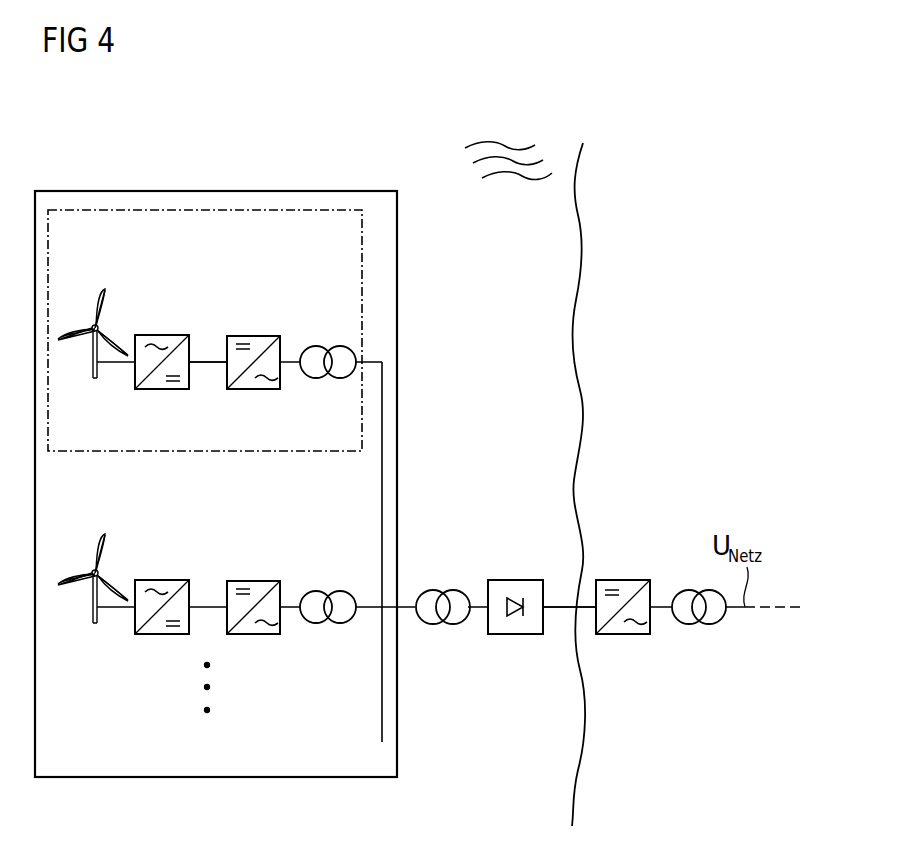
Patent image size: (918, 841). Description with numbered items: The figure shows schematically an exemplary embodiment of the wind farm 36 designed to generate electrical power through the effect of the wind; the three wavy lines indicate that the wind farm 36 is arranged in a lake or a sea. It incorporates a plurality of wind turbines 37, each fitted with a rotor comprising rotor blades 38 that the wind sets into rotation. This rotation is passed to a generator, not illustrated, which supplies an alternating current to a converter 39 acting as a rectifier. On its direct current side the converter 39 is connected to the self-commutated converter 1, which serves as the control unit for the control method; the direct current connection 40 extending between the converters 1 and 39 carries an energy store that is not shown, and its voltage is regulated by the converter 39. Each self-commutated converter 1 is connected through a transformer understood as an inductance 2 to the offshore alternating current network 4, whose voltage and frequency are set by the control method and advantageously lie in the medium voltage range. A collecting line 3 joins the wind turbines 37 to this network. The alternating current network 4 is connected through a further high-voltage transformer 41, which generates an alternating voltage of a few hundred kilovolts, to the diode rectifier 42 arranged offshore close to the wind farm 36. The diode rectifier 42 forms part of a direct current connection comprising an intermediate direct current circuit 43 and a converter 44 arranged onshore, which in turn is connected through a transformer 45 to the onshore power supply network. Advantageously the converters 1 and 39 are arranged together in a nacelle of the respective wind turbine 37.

The self-commutated converter 1 is at (250, 336).
The inductance 2 is at (320, 346).
The collector line 3 is at (382, 362).
The offshore alternating current network 4 is at (417, 563).
The wind farm 36 is at (273, 191).
The wind turbine 37 is at (163, 210).
The rotor blades 38 is at (100, 302).
The converter 39 is at (160, 335).
The direct current connection 40 is at (207, 363).
The high-voltage transformer 41 is at (447, 625).
The diode rectifier 42 is at (520, 634).
The intermediate direct current circuit 43 is at (550, 607).
The converter 44 is at (618, 634).
The transformer 45 is at (707, 625).